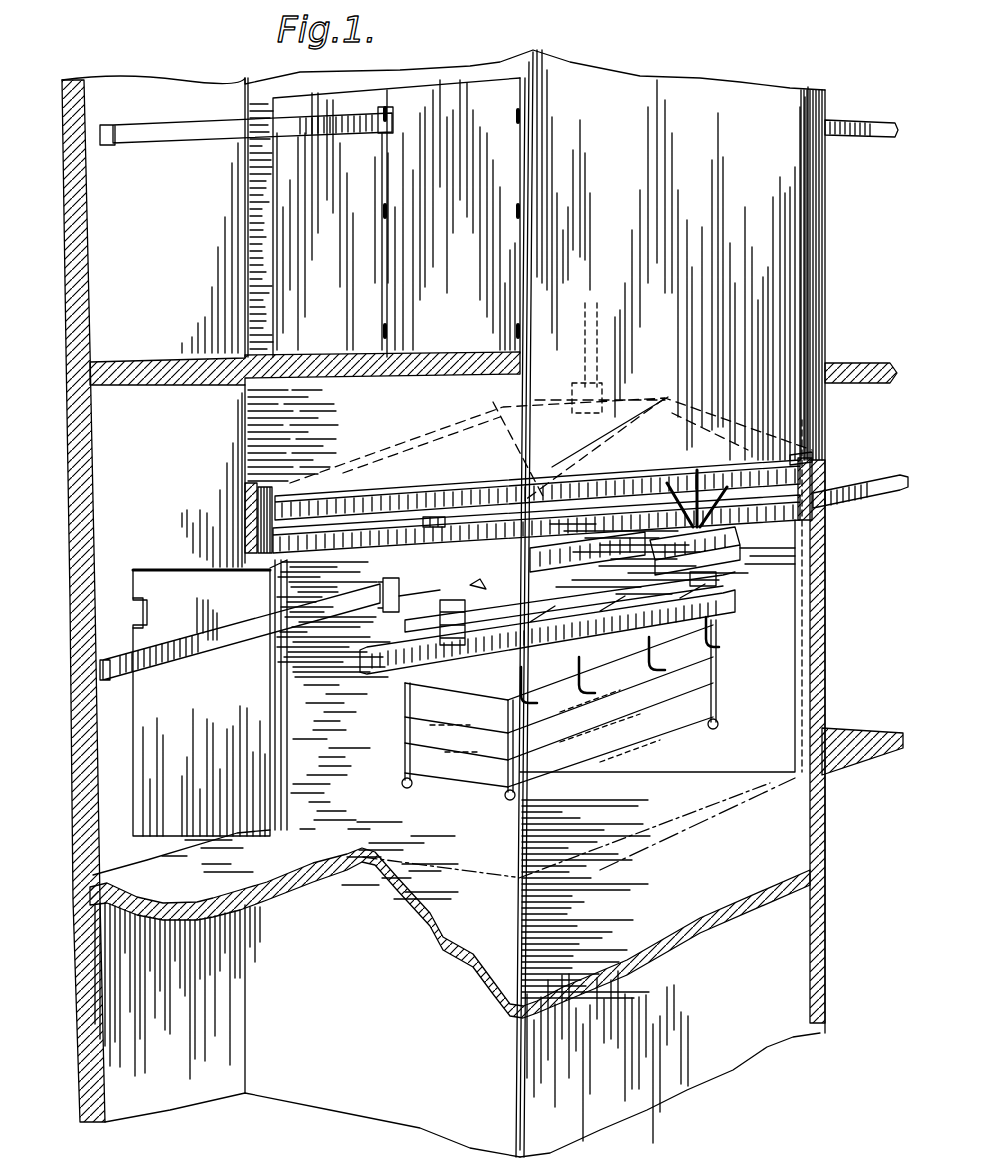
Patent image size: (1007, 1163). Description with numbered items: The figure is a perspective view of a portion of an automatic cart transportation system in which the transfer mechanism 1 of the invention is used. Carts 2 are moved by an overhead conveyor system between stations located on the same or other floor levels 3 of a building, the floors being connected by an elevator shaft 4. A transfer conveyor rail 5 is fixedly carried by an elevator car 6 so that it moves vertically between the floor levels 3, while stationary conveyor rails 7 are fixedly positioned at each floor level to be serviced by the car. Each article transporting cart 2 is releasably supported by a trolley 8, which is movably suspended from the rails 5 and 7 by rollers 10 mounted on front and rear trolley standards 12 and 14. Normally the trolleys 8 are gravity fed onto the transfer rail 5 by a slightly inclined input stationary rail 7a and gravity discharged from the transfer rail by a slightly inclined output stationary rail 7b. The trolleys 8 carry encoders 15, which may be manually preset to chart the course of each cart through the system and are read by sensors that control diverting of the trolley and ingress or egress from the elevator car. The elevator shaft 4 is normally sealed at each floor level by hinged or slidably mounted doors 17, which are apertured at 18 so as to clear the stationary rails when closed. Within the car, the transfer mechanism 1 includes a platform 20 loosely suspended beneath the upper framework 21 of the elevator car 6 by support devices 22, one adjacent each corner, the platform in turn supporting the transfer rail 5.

The transfer mechanism 1 is at (785, 562).
The cart 2 is at (733, 679).
The floor level 3 is at (872, 364).
The elevator shaft 4 is at (810, 823).
The transfer conveyor rail 5 is at (480, 584).
The elevator car 6 is at (822, 458).
The stationary conveyor rail 7 is at (168, 120).
The input stationary rail 7a is at (862, 498).
The output stationary rail 7b is at (225, 652).
The trolley 8 is at (739, 614).
The roller 10 is at (386, 612).
The front trolley standard 12 is at (466, 607).
The rear trolley standard 14 is at (716, 582).
The encoder 15 is at (440, 614).
The door 17 is at (323, 321).
The aperture 18 is at (393, 112).
The platform 20 is at (536, 528).
The upper framework 21 is at (436, 524).
The support device 22 is at (838, 466).